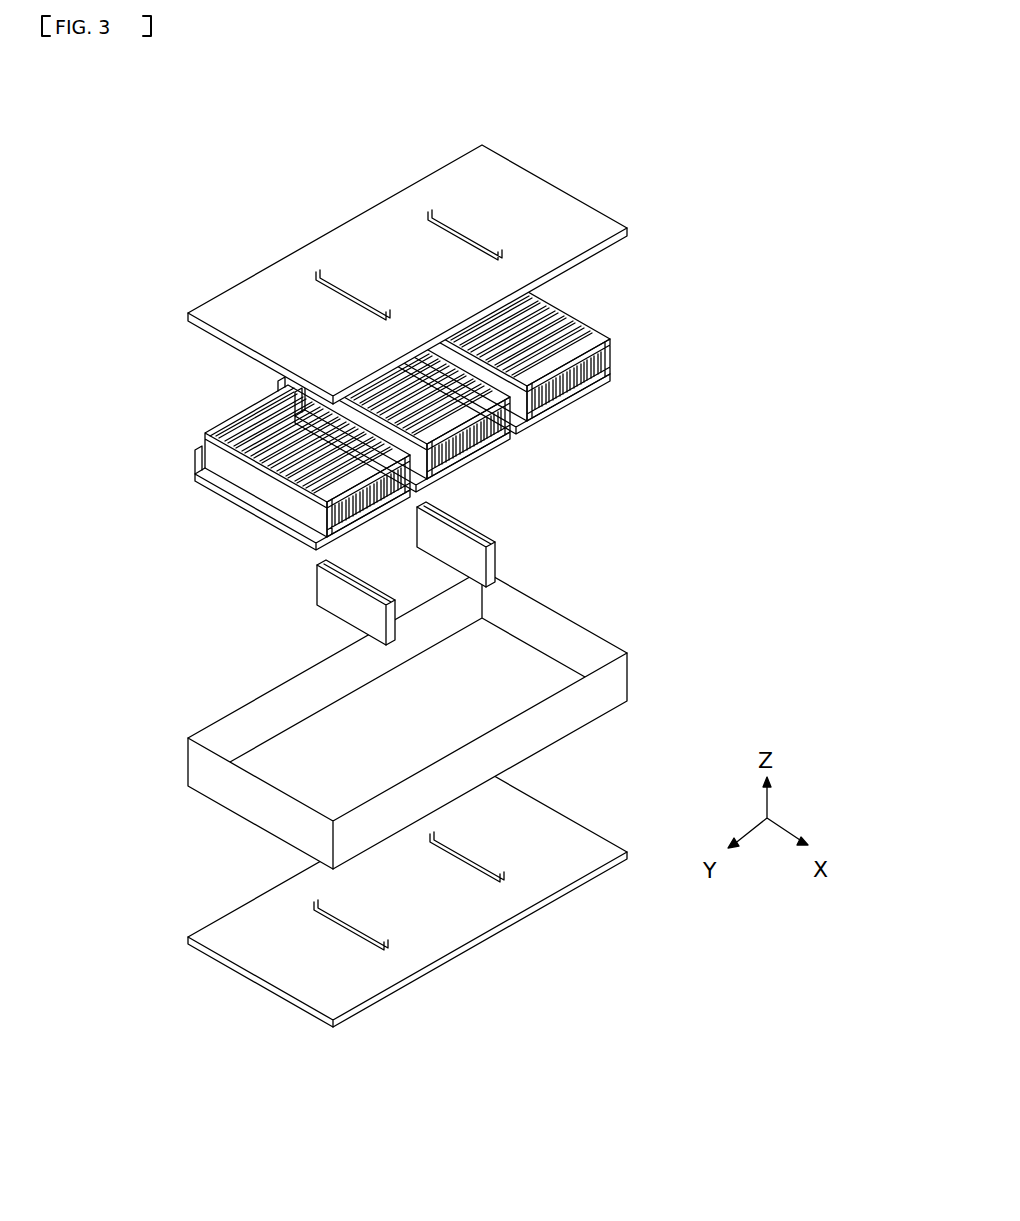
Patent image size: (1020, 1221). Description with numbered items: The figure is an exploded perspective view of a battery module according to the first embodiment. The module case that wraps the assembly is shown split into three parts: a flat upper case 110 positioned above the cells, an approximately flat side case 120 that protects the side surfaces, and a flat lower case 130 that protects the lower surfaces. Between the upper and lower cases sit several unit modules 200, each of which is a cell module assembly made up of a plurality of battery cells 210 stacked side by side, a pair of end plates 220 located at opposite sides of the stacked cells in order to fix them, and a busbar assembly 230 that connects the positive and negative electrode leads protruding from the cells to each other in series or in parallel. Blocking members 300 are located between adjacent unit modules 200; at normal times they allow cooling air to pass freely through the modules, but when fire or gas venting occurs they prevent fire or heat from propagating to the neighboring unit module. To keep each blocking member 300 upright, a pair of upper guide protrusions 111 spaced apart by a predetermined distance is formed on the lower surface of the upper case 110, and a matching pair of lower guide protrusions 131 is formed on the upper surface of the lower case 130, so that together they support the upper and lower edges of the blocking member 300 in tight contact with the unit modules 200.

The upper case 110 is at (407, 257).
The upper guide protrusions 111 is at (445, 212).
The side case 120 is at (205, 770).
The lower case 130 is at (366, 898).
The lower guide protrusions 131 is at (314, 906).
The unit module 200 is at (457, 412).
The battery cells 210 is at (205, 445).
The end plate 220 is at (212, 480).
The busbar assembly 230 is at (325, 516).
The blocking member 300 is at (478, 562).